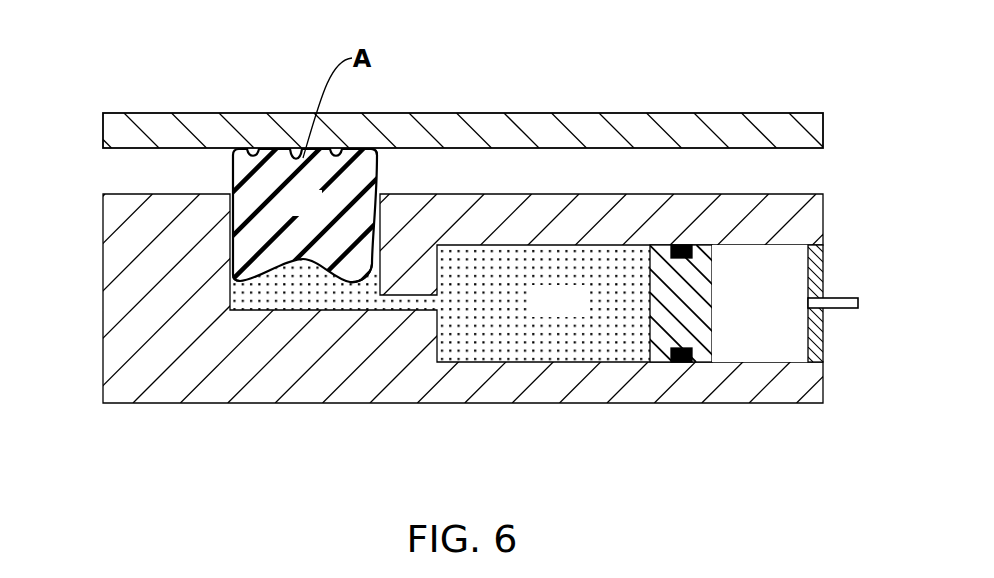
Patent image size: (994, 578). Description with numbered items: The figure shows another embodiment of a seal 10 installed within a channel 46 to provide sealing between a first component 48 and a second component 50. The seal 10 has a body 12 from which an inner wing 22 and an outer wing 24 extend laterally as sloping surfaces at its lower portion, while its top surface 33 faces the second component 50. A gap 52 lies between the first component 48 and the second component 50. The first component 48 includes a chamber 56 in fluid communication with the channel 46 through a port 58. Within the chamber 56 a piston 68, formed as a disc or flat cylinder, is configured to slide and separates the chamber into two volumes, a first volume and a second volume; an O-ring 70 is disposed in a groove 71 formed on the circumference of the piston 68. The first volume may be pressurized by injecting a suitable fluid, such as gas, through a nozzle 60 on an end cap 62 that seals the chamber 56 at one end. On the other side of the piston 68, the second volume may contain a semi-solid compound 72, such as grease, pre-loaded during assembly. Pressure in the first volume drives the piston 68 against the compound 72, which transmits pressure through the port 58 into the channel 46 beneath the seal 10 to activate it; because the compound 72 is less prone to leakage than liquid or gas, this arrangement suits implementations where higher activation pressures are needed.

The seal 10 is at (667, 71).
The body 12 is at (318, 216).
The inner wing 22 is at (233, 268).
The outer wing 24 is at (372, 272).
The top surface 33 is at (352, 155).
The channel 46 is at (247, 307).
The first component 48 is at (118, 349).
The second component 50 is at (157, 122).
The gap 52 is at (118, 171).
The chamber 56 is at (758, 352).
The port 58 is at (392, 303).
The nozzle 60 is at (845, 297).
The end cap 62 is at (823, 342).
The piston 68 is at (693, 277).
The O-ring 70 is at (688, 362).
The groove 71 is at (694, 257).
The semi-solid compound 72 is at (572, 340).